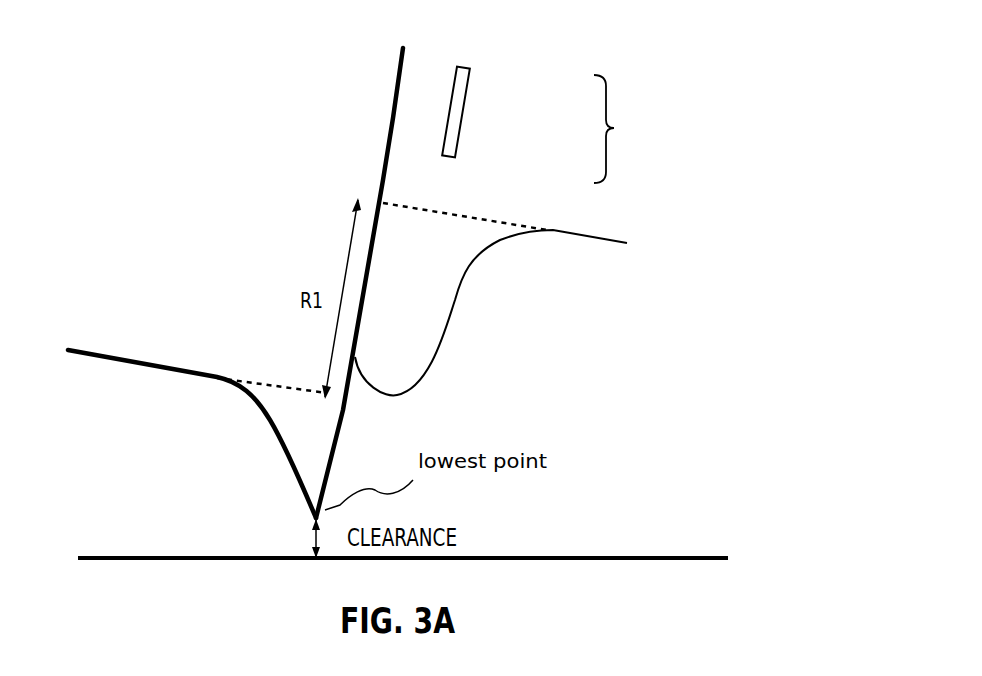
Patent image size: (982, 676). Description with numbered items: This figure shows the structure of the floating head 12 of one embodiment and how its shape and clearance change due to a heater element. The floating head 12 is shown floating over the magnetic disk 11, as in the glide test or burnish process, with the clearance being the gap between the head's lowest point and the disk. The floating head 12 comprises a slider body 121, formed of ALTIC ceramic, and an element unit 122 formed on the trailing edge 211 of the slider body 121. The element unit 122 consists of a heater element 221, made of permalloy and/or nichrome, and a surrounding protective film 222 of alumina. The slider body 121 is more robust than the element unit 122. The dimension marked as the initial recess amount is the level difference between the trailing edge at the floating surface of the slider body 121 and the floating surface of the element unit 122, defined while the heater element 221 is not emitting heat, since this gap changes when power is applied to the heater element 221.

The magnetic disk 11 is at (658, 557).
The floating head 12 is at (700, 47).
The slider body 121 is at (238, 242).
The element unit 122 is at (614, 128).
The trailing edge 211 is at (405, 84).
The heater element 221 is at (462, 110).
The protective film 222 is at (585, 173).